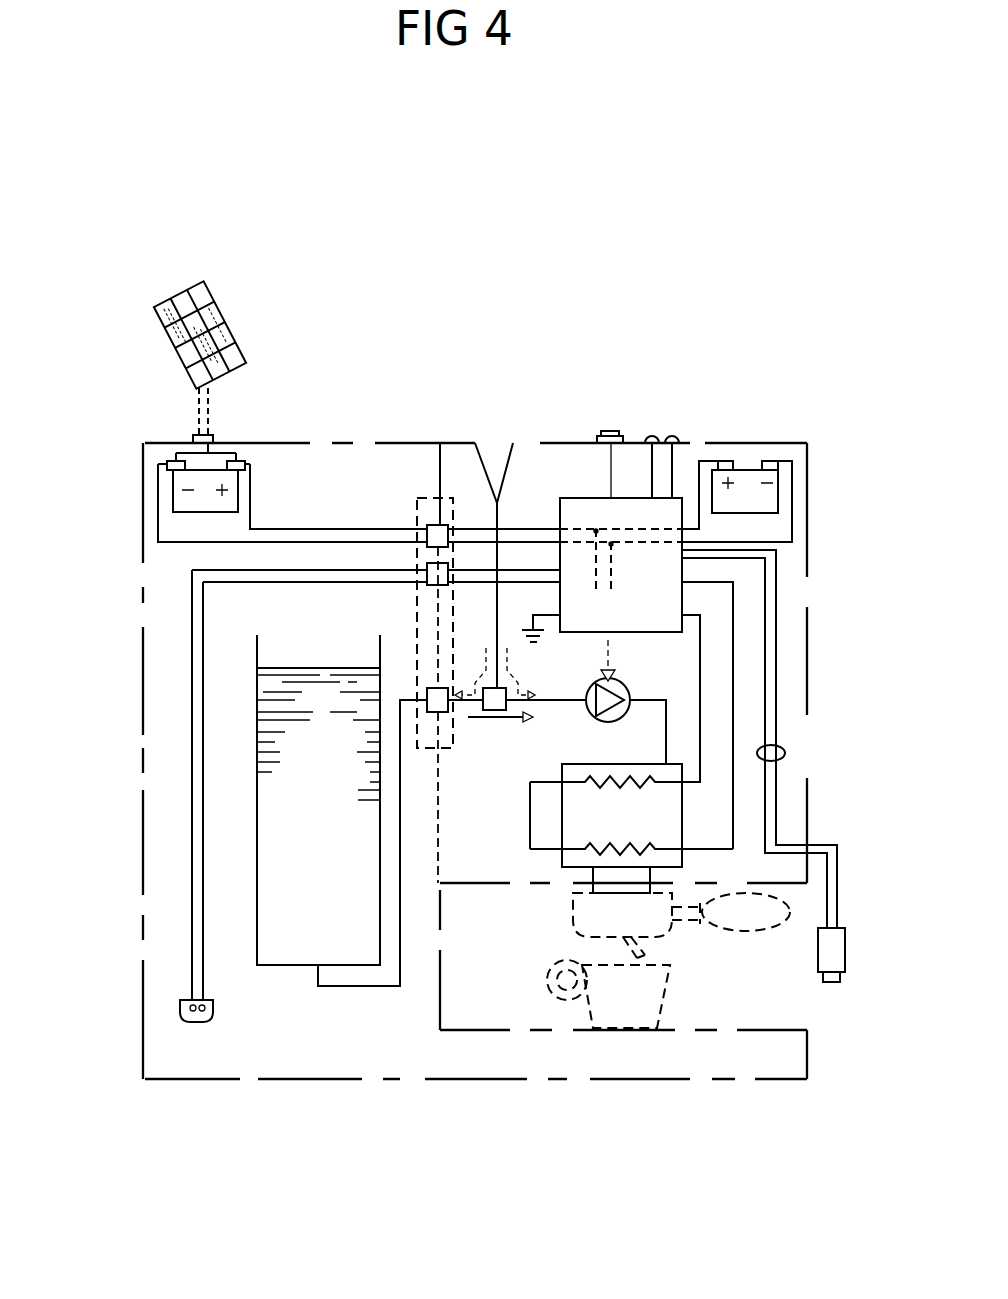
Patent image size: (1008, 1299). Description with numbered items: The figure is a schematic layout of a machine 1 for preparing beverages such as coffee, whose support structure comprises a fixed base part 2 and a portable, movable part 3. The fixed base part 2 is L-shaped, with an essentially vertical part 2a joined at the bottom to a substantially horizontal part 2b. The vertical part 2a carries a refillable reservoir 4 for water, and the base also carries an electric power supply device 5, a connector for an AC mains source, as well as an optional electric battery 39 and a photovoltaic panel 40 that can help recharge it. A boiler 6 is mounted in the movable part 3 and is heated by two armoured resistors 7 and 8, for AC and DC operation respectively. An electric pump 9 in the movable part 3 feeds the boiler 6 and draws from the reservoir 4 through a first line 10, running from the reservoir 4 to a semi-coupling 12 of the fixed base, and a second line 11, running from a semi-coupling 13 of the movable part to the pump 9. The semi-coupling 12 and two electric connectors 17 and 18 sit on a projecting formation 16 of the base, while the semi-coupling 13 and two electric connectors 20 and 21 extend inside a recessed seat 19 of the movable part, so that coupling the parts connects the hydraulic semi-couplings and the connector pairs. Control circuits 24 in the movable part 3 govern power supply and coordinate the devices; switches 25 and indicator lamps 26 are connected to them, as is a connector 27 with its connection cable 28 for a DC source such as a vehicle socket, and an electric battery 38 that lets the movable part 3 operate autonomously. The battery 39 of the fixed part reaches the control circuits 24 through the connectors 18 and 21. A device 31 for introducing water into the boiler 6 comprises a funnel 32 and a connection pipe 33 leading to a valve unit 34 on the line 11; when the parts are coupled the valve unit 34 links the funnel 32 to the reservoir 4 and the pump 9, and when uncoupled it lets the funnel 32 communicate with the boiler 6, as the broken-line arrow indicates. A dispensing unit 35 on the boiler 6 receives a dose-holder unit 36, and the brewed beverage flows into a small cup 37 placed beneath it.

The machine 1 is at (694, 280).
The fixed base part 2 is at (305, 426).
The vertical part 2a is at (126, 795).
The horizontal part 2b is at (550, 1080).
The movable part 3 is at (575, 442).
The reservoir 4 is at (257, 832).
The electric power supply device 5 is at (193, 1024).
The boiler 6 is at (570, 754).
The armoured resistor 7 is at (600, 785).
The armoured resistor 8 is at (623, 847).
The electric pump 9 is at (628, 682).
The line 10 is at (401, 818).
The line 11 is at (553, 697).
The semi-coupling 12 is at (431, 687).
The semi-coupling 13 is at (443, 686).
The projecting formation 16 is at (417, 516).
The electric connector 17 is at (423, 576).
The electric connector 18 is at (432, 524).
The recessed seat 19 is at (452, 566).
The electric connector 20 is at (450, 583).
The electric connector 21 is at (441, 497).
The control circuits 24 is at (543, 509).
The switches 25 is at (612, 436).
The indicator lamps 26 is at (670, 437).
The connector 27 is at (818, 946).
The connection cable 28 is at (787, 745).
The device for introducing water 31 is at (504, 428).
The funnel 32 is at (481, 421).
The connection pipe 33 is at (497, 553).
The valve unit 34 is at (518, 723).
The dispensing unit 35 is at (650, 880).
The dose-holder unit 36 is at (573, 907).
The small cup 37 is at (667, 1000).
The electric battery 38 is at (748, 475).
The electric battery 39 is at (188, 498).
The photovoltaic panel 40 is at (196, 303).